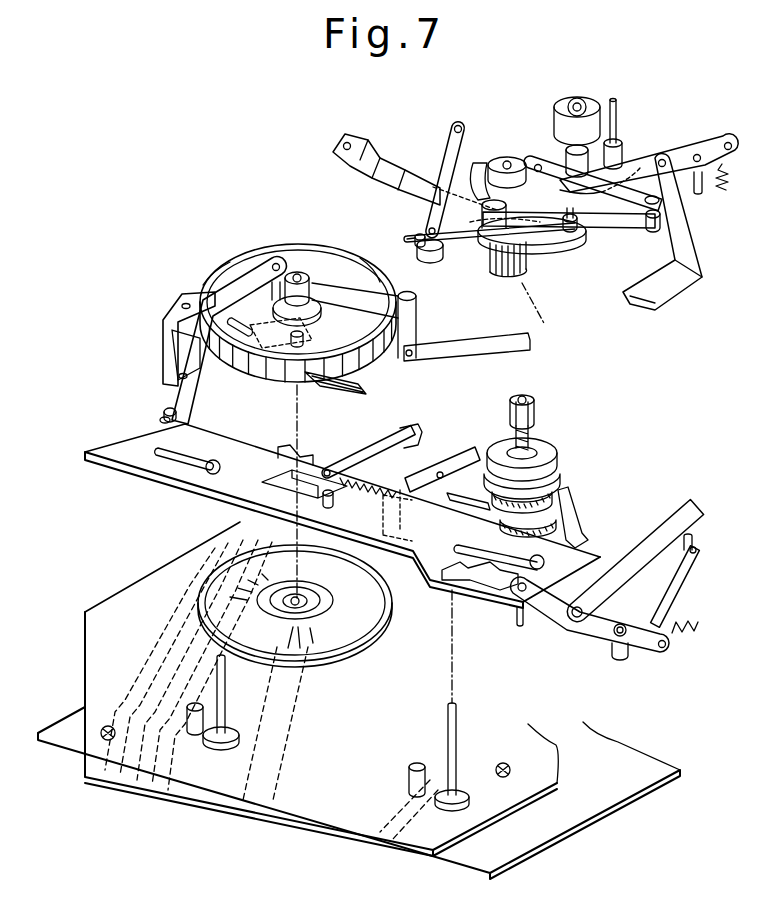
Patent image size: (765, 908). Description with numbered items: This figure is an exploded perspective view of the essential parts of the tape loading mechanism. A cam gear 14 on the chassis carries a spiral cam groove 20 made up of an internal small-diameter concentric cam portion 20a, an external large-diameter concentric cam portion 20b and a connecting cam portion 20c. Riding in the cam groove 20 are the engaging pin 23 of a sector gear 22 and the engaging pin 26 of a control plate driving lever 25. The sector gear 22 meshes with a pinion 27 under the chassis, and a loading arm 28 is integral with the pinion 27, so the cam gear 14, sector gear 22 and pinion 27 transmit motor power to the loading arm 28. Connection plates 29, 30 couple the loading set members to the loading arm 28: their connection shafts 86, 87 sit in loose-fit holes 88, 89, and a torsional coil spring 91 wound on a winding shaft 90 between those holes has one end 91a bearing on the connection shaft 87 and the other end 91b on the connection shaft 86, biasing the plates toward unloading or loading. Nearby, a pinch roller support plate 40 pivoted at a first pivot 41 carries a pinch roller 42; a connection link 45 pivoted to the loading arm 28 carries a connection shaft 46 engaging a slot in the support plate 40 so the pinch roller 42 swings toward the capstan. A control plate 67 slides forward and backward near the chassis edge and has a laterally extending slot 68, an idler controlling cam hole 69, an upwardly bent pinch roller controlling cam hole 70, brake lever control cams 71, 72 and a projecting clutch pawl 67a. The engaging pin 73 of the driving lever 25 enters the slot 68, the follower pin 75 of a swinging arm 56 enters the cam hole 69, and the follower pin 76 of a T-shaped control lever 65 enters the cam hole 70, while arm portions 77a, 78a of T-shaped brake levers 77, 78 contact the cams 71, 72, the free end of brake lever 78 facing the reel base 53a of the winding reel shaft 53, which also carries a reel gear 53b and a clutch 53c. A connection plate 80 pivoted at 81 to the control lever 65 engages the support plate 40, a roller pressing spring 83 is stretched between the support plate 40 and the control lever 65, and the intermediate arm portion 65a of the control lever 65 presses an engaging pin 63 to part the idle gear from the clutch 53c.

The cam gear 14 is at (206, 287).
The cam groove 20 is at (312, 242).
The internal small-diameter concentric circular cam portion 20a is at (350, 381).
The external large-diameter concentric circular cam portion 20b is at (210, 288).
The cam portion 20c is at (367, 283).
The sector gear 22 is at (487, 350).
The engaging pin 23 is at (322, 316).
The control plate driving lever 25 is at (163, 340).
The engaging pin 26 is at (290, 276).
The pinion 27 is at (532, 256).
The loading arm 28 is at (484, 164).
The connection plate 29 is at (392, 146).
The connection plate 30 is at (447, 152).
The pinch roller support plate 40 is at (688, 148).
The first pivot 41 is at (702, 194).
The pinch roller 42 is at (565, 108).
The connection link 45 is at (623, 222).
The connection shaft 46 is at (644, 220).
The winding reel shaft 53 is at (538, 408).
The reel base 53a is at (556, 452).
The reel gear 53b is at (560, 524).
The clutch 53c is at (562, 486).
The swinging arm 56 is at (403, 530).
The engaging pin 63 is at (699, 535).
The control lever 65 is at (590, 628).
The intermediate arm portion 65a is at (674, 592).
The control plate 67 is at (143, 468).
The clutch pawl 67a is at (583, 541).
The slot 68 is at (160, 420).
The idler controlling cam hole 69 is at (283, 484).
The pinch roller controlling cam hole 70 is at (464, 578).
The brake lever control cam 71 is at (277, 450).
The brake lever control cam 72 is at (460, 518).
The engaging pin 73 is at (166, 408).
The follower pin 75 is at (323, 500).
The follower pin 76 is at (524, 622).
The brake lever 77 is at (388, 447).
The arm portion 77a is at (313, 448).
The brake lever 78 is at (453, 452).
The arm portion 78a is at (428, 464).
The connection plate 80 is at (690, 256).
The pivot 81 is at (622, 654).
The roller pressing spring 83 is at (730, 188).
The connection shaft 86 is at (628, 136).
The connection shaft 87 is at (422, 252).
The loose-fit hole 88 is at (436, 262).
The loose-fit hole 89 is at (566, 240).
The winding shaft 90 is at (500, 200).
The torsional coil spring 91 is at (487, 238).
The spring end 91a is at (417, 235).
The spring end 91b is at (610, 190).